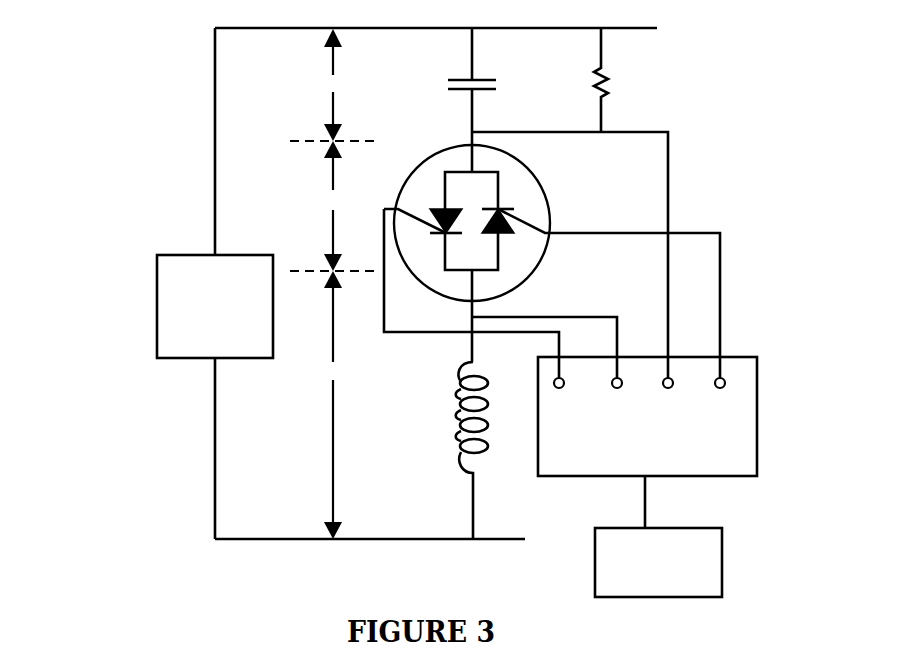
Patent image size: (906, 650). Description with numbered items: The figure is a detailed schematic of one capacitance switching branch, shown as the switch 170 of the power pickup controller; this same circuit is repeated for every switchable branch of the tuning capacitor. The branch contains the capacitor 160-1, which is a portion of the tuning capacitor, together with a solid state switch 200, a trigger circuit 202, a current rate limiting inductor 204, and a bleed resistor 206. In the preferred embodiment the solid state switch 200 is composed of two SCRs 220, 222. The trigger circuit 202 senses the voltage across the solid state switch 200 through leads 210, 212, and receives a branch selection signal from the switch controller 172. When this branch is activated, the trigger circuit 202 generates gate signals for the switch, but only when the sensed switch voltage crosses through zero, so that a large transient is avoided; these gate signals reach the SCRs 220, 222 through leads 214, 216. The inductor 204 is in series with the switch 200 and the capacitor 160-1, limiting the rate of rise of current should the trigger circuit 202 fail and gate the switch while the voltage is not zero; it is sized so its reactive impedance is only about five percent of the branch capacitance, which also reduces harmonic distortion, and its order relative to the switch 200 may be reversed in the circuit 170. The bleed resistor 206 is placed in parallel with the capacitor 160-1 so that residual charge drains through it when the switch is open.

The switch 170 is at (150, 79).
The capacitor 160-1 is at (493, 100).
The bleed resistor 206 is at (624, 80).
The solid state switch 200 is at (526, 255).
The SCR 220 is at (423, 208).
The SCR 222 is at (601, 293).
The current rate limiting inductor 204 is at (447, 450).
The trigger circuit 202 is at (735, 357).
The lead 214 is at (564, 399).
The lead 210 is at (617, 399).
The lead 212 is at (669, 399).
The lead 216 is at (721, 399).
The switch controller 172 is at (705, 528).